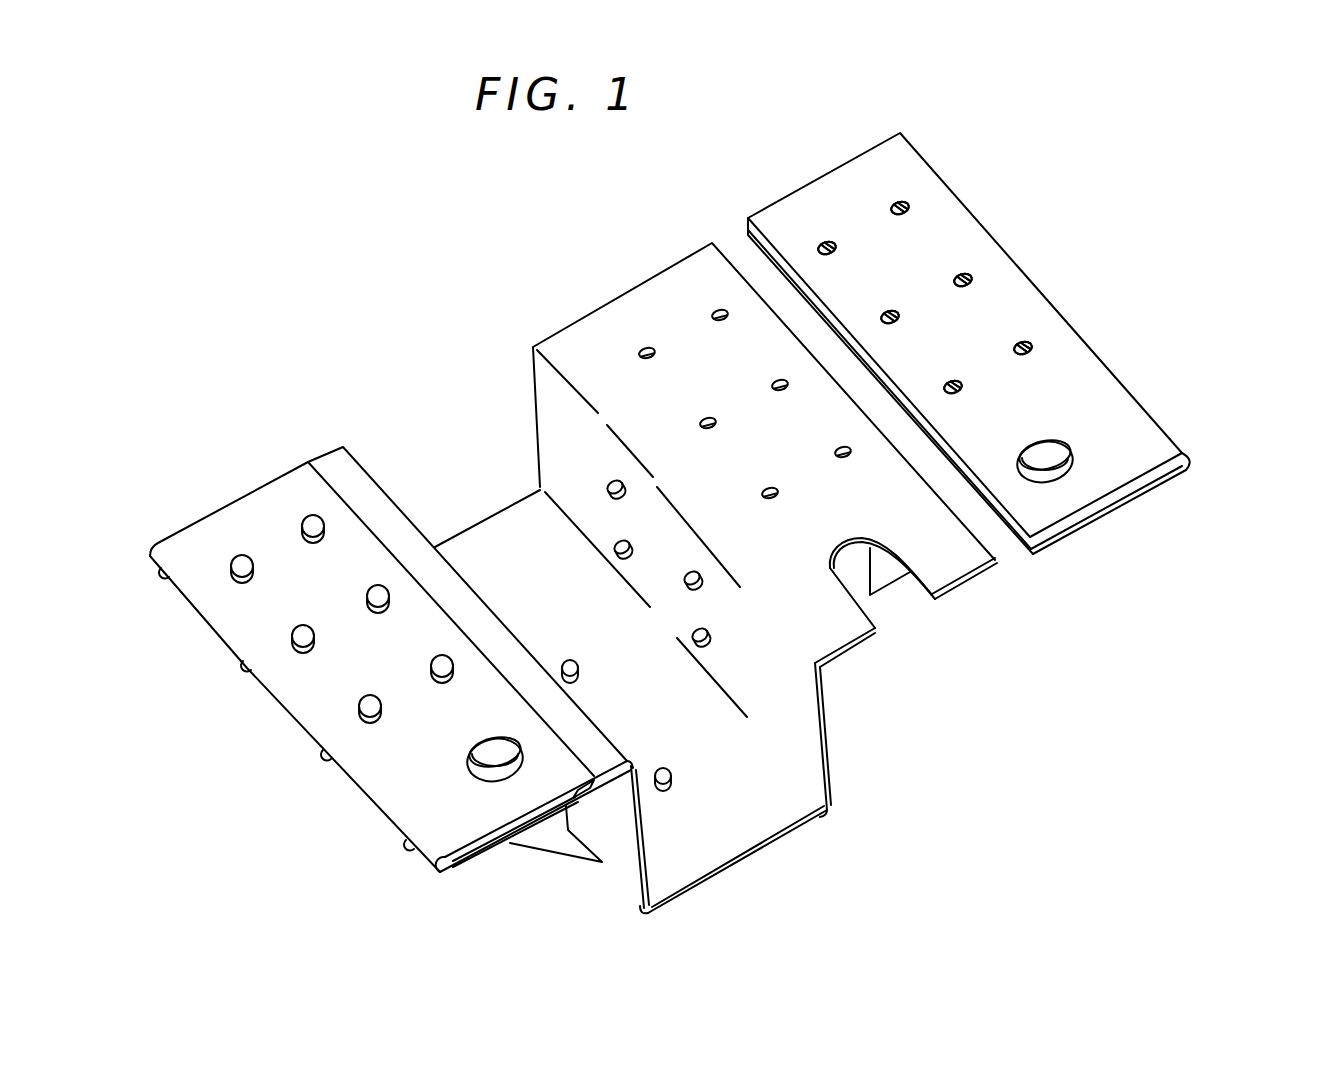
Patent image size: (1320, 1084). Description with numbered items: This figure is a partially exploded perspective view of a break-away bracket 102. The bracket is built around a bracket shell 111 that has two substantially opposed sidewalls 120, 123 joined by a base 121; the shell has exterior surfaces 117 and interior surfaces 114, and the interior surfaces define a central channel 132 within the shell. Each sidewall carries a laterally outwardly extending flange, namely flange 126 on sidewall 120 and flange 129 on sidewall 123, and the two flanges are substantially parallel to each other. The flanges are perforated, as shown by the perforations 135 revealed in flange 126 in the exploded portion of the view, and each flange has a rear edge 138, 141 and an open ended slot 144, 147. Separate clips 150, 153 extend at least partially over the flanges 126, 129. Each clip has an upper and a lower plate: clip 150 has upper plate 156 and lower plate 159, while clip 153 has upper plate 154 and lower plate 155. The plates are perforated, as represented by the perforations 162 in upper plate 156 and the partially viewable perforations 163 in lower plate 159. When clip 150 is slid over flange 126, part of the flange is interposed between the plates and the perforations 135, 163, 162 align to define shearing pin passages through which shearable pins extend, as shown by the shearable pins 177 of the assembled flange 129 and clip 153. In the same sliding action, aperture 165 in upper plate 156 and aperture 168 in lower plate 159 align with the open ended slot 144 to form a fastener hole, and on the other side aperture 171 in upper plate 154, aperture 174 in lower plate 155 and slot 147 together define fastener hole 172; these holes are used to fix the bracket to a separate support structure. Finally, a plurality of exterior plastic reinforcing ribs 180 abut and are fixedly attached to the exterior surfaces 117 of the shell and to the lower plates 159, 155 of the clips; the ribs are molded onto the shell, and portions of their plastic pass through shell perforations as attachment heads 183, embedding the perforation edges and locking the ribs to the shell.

The break-away bracket 102 is at (905, 905).
The bracket shell 111 is at (832, 812).
The interior surfaces 114 is at (790, 668).
The exterior surfaces 117 is at (610, 860).
The sidewall 120 is at (829, 747).
The base 121 is at (742, 838).
The sidewall 123 is at (632, 910).
The laterally outwardly extending flange 126 is at (632, 297).
The laterally outwardly extending flange 129 is at (330, 462).
The central channel 132 is at (530, 559).
The perforations 135 is at (652, 353).
The rear edge 138 is at (970, 583).
The rear edge 141 is at (640, 800).
The open ended slot 144 is at (902, 600).
The open ended slot 147 is at (538, 818).
The clip 150 is at (1190, 452).
The clip 153 is at (363, 800).
The upper plate 154 is at (618, 758).
The lower plate 155 is at (587, 802).
The upper plate 156 is at (1147, 478).
The lower plate 159 is at (1097, 517).
The perforations 162 is at (823, 243).
The perforations 163 is at (835, 245).
The aperture 165 is at (1047, 442).
The aperture 168 is at (1033, 447).
The aperture 171 is at (497, 738).
The fastener hole 172 is at (483, 774).
The aperture 174 is at (474, 745).
The shearable pins 177 is at (243, 555).
The exterior plastic reinforcing ribs 180 is at (245, 668).
The attachment heads 183 is at (607, 547).